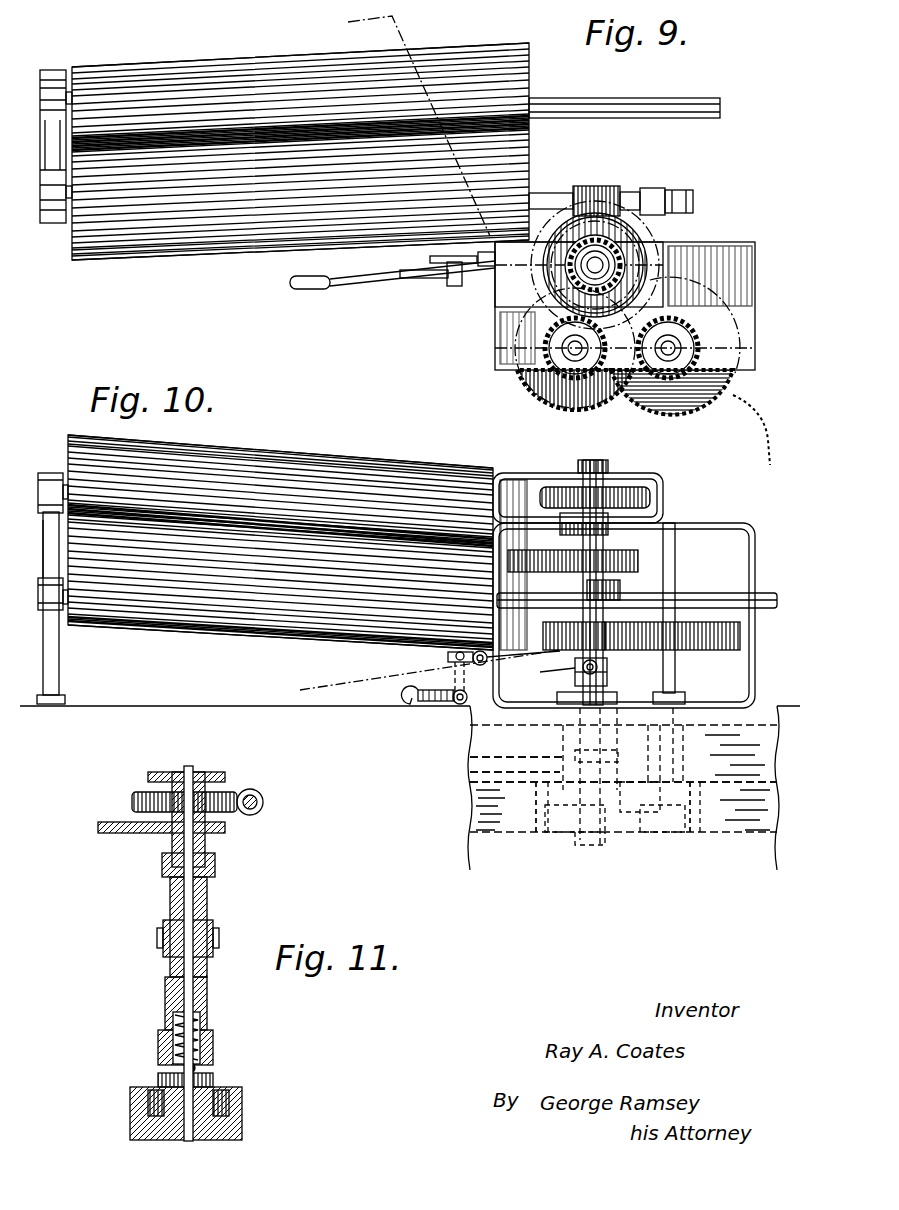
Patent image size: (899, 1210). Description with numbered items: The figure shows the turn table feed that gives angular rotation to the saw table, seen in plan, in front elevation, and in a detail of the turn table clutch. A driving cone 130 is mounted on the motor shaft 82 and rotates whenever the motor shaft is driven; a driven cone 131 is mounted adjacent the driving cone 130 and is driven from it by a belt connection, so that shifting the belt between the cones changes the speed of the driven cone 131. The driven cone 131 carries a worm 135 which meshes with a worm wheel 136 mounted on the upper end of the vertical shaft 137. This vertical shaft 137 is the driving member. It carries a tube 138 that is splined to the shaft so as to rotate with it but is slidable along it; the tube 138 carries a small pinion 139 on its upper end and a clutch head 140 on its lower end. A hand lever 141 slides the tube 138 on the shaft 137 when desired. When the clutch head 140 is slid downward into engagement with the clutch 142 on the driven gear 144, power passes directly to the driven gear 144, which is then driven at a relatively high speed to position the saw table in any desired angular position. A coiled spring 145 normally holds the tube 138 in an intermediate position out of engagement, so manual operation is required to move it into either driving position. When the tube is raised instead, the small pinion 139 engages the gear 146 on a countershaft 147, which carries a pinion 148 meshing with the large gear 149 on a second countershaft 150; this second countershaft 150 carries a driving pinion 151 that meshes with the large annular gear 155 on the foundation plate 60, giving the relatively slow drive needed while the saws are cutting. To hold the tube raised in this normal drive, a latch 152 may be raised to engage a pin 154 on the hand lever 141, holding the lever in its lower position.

In FIG. 10, the foundation plate 60 is at (470, 806).
In FIG. 9, the motor shaft 82 is at (672, 112).
In FIG. 10, the motor shaft 82 is at (764, 596).
In FIG. 9, the driving cone 130 is at (346, 60).
In FIG. 10, the driving cone 130 is at (276, 640).
In FIG. 9, the driven cone 131 is at (270, 250).
In FIG. 10, the driven cone 131 is at (292, 455).
In FIG. 9, the worm 135 is at (608, 188).
In FIG. 11, the worm 135 is at (264, 801).
In FIG. 9, the worm wheel 136 is at (645, 240).
In FIG. 10, the worm wheel 136 is at (655, 498).
In FIG. 11, the worm wheel 136 is at (133, 801).
In FIG. 9, the vertical shaft 137 is at (640, 266).
In FIG. 10, the vertical shaft 137 is at (605, 546).
In FIG. 11, the vertical shaft 137 is at (205, 838).
In FIG. 10, the tube 138 is at (608, 686).
In FIG. 11, the tube 138 is at (208, 904).
In FIG. 9, the small pinion 139 is at (700, 278).
In FIG. 10, the small pinion 139 is at (622, 588).
In FIG. 11, the small pinion 139 is at (216, 866).
In FIG. 10, the clutch head 140 is at (470, 758).
In FIG. 11, the clutch head 140 is at (158, 1058).
In FIG. 9, the hand lever 141 is at (377, 284).
In FIG. 10, the hand lever 141 is at (490, 698).
In FIG. 11, the hand lever 141 is at (157, 938).
In FIG. 10, the clutch 142 is at (470, 781).
In FIG. 11, the clutch 142 is at (215, 1080).
In FIG. 9, the driven gear 144 is at (546, 195).
In FIG. 10, the driven gear 144 is at (535, 828).
In FIG. 11, the driven gear 144 is at (243, 1113).
In FIG. 11, the coiled spring 145 is at (185, 1069).
In FIG. 9, the gear 146 is at (518, 382).
In FIG. 10, the gear 146 is at (640, 560).
In FIG. 9, the countershaft 147 is at (545, 348).
In FIG. 10, the countershaft 147 is at (572, 672).
In FIG. 9, the pinion 148 is at (540, 405).
In FIG. 10, the pinion 148 is at (600, 640).
In FIG. 9, the gear 149 is at (648, 412).
In FIG. 10, the gear 149 is at (677, 648).
In FIG. 9, the second countershaft 150 is at (700, 348).
In FIG. 10, the second countershaft 150 is at (677, 682).
In FIG. 9, the driving pinion 151 is at (738, 370).
In FIG. 10, the driving pinion 151 is at (700, 826).
In FIG. 9, the latch 152 is at (428, 284).
In FIG. 10, the latch 152 is at (418, 712).
In FIG. 9, the pin 154 is at (458, 288).
In FIG. 10, the pin 154 is at (446, 654).
In FIG. 9, the large annular gear 155 is at (755, 428).
In FIG. 10, the large annular gear 155 is at (497, 836).